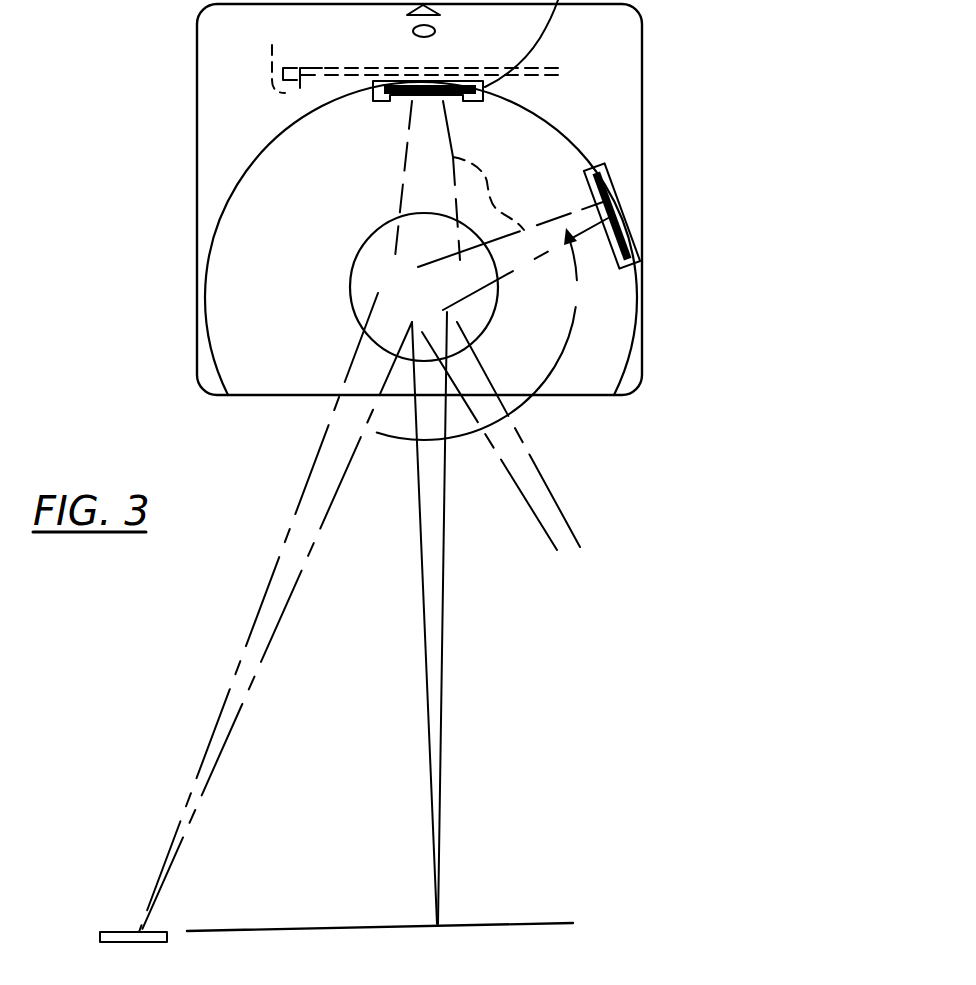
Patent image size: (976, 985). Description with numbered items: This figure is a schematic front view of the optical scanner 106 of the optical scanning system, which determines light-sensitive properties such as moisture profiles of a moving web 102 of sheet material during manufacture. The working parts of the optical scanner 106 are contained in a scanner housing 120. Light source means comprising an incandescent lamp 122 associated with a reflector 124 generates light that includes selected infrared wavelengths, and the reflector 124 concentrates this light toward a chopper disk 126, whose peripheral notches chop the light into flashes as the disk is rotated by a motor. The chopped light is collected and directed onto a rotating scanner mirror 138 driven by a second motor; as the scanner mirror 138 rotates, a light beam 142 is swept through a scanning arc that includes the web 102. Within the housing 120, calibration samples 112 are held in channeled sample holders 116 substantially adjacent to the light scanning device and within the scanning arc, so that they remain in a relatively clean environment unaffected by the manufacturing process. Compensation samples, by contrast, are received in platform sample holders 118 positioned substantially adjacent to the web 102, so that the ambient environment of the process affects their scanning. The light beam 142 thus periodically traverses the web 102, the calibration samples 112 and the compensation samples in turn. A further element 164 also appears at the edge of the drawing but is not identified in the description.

The web 102 is at (489, 923).
The optical scanner 106 is at (222, 110).
The calibration samples 112 is at (462, 101).
The channeled sample holders 116 is at (605, 166).
The platform sample holders 118 is at (125, 942).
The scanner housing 120 is at (197, 40).
The incandescent lamp 122 is at (413, 31).
The reflector 124 is at (440, 15).
The chopper disk 126 is at (272, 45).
The scanner mirror 138 is at (354, 299).
The light beam 142 is at (200, 657).
The component 164 is at (767, 978).